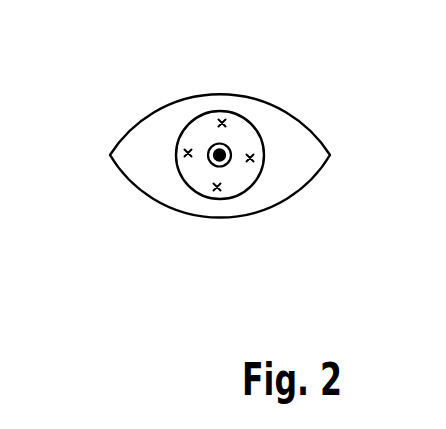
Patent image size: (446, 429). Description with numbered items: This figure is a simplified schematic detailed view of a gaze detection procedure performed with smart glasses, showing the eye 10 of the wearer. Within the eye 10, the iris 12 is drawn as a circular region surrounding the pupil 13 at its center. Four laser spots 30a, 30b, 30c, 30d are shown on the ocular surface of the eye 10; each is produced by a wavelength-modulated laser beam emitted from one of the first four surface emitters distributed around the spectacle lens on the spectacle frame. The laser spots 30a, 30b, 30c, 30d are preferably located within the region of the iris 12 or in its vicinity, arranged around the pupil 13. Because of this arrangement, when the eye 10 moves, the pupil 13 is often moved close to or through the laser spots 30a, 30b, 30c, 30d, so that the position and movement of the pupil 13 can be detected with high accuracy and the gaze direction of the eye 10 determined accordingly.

The eye 10 is at (111, 75).
The iris 12 is at (255, 185).
The pupil 13 is at (208, 148).
The laser spot 30a is at (188, 157).
The laser spot 30b is at (217, 190).
The laser spot 30c is at (222, 122).
The laser spot 30d is at (251, 157).